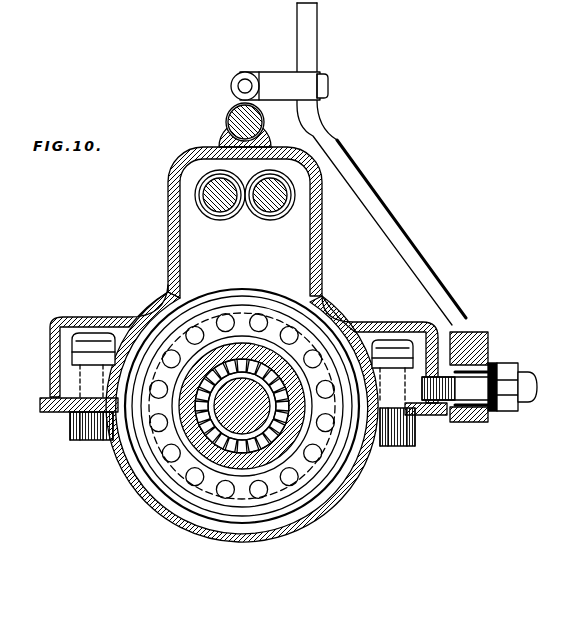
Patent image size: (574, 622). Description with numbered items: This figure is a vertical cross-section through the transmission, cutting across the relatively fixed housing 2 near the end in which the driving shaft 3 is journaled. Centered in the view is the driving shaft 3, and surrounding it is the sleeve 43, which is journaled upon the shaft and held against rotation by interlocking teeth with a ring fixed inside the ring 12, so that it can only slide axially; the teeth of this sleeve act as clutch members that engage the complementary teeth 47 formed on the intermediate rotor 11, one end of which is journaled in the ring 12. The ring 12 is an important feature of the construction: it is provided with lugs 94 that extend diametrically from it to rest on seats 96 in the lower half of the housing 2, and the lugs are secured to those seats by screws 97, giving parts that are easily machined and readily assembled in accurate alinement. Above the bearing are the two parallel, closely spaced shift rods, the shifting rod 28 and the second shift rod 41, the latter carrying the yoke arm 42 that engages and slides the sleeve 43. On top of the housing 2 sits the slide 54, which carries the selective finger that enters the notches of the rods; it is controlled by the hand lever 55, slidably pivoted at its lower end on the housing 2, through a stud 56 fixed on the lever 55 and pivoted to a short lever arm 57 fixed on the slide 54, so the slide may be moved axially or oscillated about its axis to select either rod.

The housing 2 is at (389, 322).
The driving shaft 3 is at (225, 425).
The intermediate rotor 11 is at (293, 413).
The ring 12 is at (172, 312).
The shifting rod 28 is at (287, 196).
The second shift rod 41 is at (203, 193).
The yoke arm 42 is at (212, 238).
The sleeve 43 is at (215, 398).
The complementary teeth 47 is at (276, 450).
The slide 54 is at (229, 119).
The hand lever 55 is at (386, 197).
The stud 56 is at (276, 78).
The short lever arm 57 is at (240, 100).
The lugs 94 is at (93, 388).
The seats 96 is at (431, 416).
The screws 97 is at (87, 441).